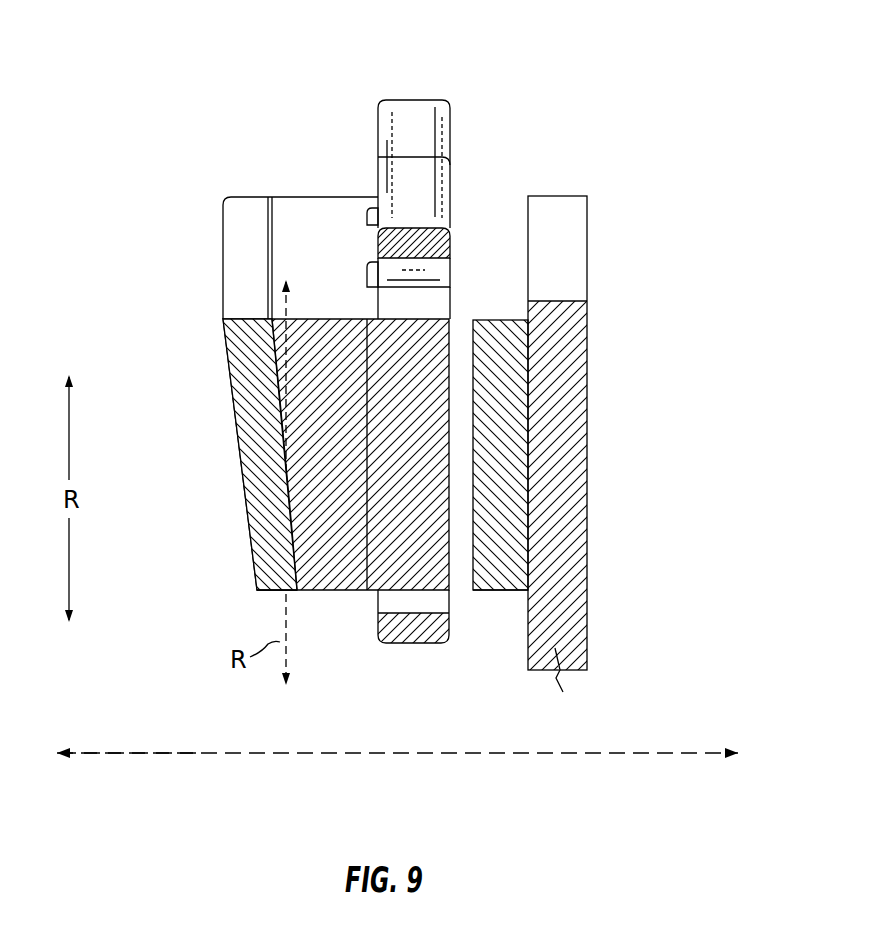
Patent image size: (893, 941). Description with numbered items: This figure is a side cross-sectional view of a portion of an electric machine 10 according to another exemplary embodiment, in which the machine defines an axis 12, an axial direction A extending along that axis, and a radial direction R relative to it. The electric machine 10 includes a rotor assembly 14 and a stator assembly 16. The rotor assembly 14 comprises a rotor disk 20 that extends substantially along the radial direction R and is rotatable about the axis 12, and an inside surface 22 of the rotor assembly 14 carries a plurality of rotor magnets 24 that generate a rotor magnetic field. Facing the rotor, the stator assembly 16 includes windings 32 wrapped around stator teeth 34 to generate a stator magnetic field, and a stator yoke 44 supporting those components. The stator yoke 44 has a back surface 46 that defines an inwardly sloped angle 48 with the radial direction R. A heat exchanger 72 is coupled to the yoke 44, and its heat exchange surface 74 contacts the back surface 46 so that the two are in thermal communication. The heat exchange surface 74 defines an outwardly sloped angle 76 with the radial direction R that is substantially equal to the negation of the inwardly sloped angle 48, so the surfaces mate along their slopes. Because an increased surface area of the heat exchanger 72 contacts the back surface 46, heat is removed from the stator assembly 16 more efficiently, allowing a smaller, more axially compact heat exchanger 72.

The electric machine 10 is at (527, 60).
The axis 12 is at (648, 753).
The rotor assembly 14 is at (571, 174).
The stator assembly 16 is at (330, 92).
The rotor disk 20 is at (568, 538).
The inside surface 22 is at (466, 385).
The rotor magnets 24 is at (515, 420).
The windings 32 is at (420, 185).
The stator teeth 34 is at (427, 307).
The stator yoke 44 is at (297, 220).
The back surface 46 is at (290, 565).
The inwardly sloped angle 48 is at (288, 568).
The heat exchanger 72 is at (233, 405).
The heat exchange surface 74 is at (287, 460).
The outwardly sloped angle 76 is at (287, 360).